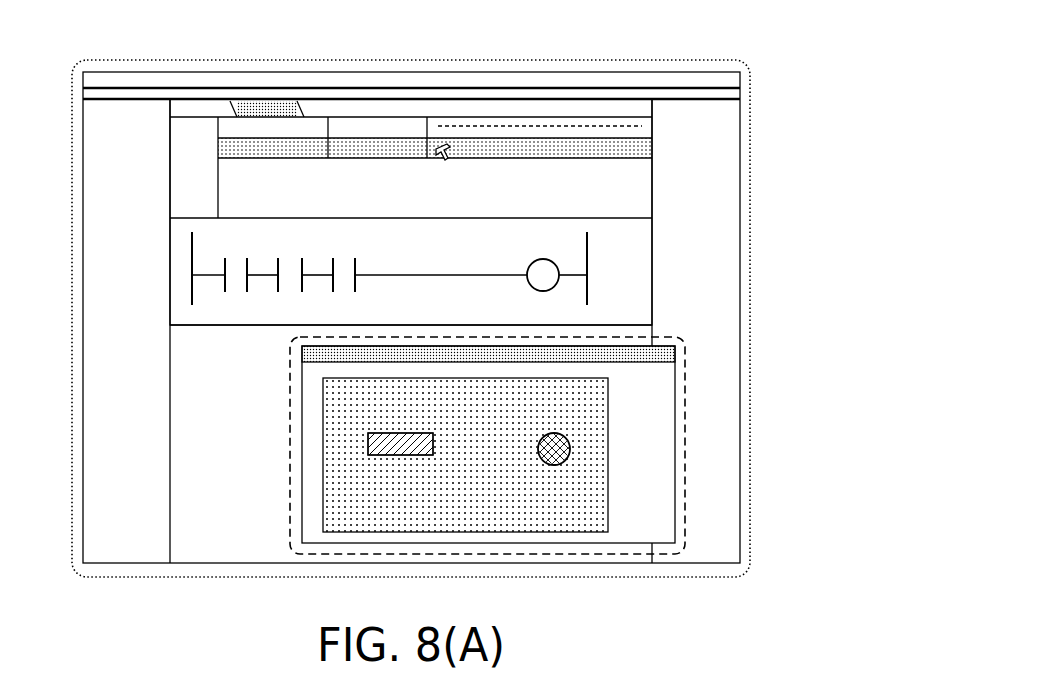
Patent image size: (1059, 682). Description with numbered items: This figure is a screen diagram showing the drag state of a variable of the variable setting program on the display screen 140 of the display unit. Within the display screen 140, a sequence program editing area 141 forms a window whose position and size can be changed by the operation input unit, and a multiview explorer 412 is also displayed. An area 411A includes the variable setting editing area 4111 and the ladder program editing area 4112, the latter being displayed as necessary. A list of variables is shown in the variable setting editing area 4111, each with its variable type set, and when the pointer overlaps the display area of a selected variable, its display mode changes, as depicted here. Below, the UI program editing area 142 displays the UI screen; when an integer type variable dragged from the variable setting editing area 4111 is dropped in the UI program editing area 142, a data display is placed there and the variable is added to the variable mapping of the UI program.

The display screen 140 is at (718, 68).
The sequence program editing area 141 is at (752, 112).
The multiview explorer 412 is at (95, 139).
The area 411A is at (702, 25).
The variable setting editing area 4111 is at (609, 114).
The ladder program editing area 4112 is at (627, 238).
The UI program editing area 142 is at (622, 555).